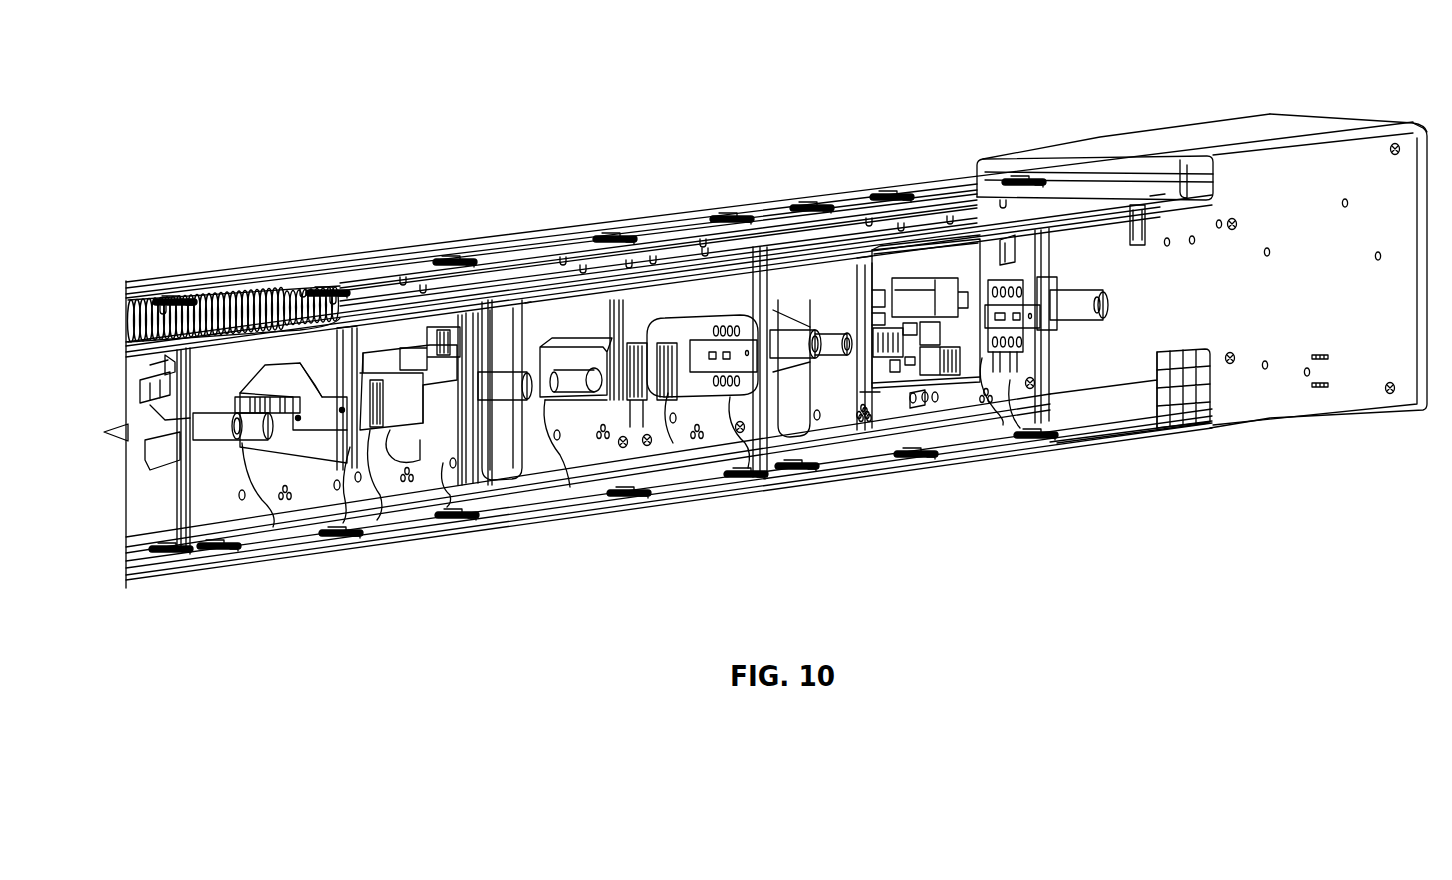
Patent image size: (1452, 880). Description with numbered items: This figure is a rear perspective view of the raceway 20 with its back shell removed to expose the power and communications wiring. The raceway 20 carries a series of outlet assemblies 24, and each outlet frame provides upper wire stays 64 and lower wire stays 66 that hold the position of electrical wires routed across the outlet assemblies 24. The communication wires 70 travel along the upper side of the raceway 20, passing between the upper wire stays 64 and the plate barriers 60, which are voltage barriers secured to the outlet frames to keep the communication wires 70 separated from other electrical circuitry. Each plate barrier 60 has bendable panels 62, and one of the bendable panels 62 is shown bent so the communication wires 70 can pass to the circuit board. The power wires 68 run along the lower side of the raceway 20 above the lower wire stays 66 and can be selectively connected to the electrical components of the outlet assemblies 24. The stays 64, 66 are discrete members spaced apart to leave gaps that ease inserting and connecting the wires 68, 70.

The raceway 20 is at (1324, 86).
The outlet assemblies 24 is at (318, 240).
The plate barrier 60 is at (595, 288).
The bendable panels 62 is at (909, 275).
The upper wire stays 64 is at (462, 256).
The lower wire stays 66 is at (640, 493).
The power wires 68 is at (1098, 420).
The communication wires 70 is at (1117, 180).